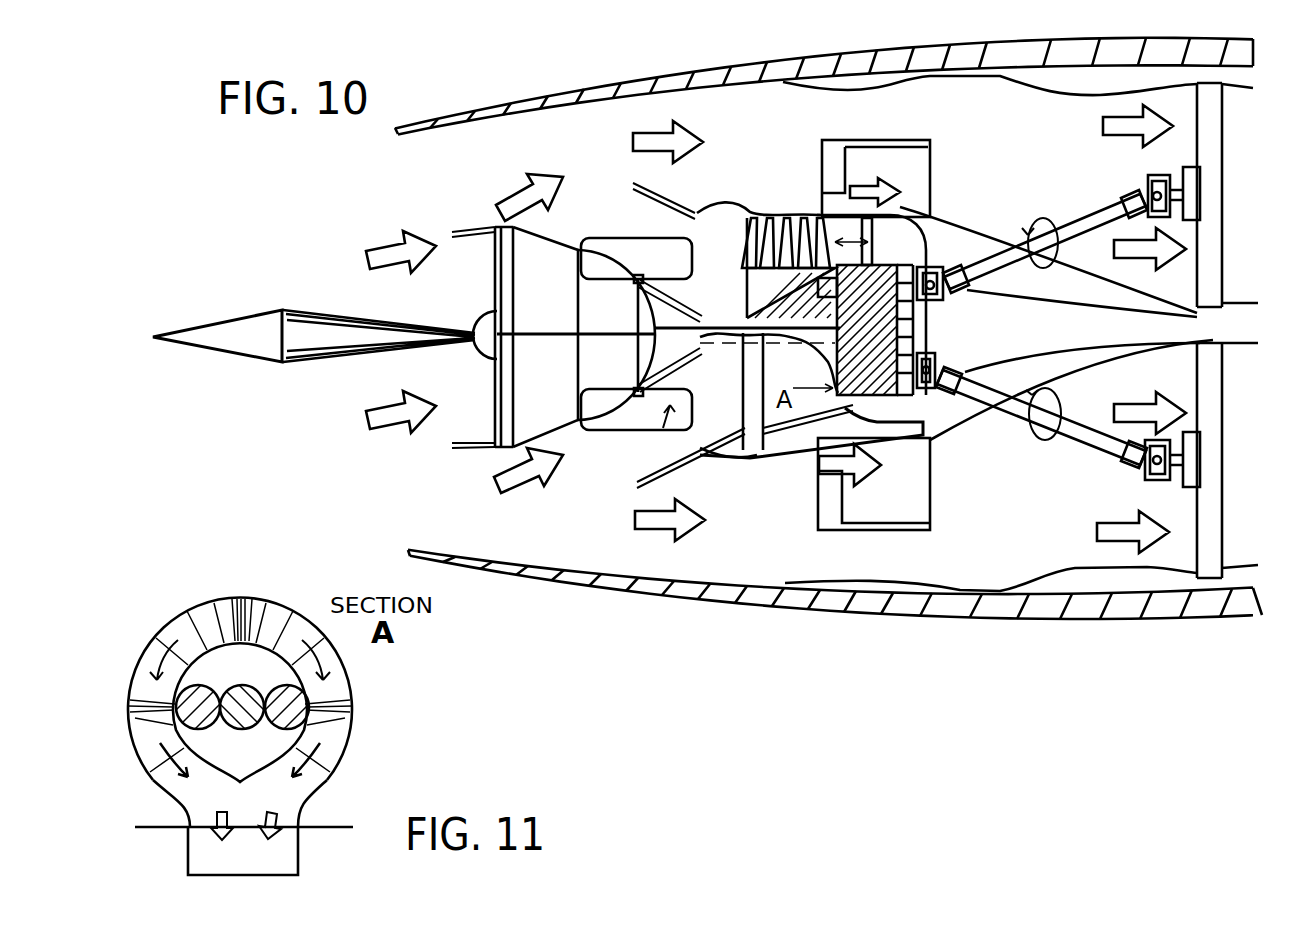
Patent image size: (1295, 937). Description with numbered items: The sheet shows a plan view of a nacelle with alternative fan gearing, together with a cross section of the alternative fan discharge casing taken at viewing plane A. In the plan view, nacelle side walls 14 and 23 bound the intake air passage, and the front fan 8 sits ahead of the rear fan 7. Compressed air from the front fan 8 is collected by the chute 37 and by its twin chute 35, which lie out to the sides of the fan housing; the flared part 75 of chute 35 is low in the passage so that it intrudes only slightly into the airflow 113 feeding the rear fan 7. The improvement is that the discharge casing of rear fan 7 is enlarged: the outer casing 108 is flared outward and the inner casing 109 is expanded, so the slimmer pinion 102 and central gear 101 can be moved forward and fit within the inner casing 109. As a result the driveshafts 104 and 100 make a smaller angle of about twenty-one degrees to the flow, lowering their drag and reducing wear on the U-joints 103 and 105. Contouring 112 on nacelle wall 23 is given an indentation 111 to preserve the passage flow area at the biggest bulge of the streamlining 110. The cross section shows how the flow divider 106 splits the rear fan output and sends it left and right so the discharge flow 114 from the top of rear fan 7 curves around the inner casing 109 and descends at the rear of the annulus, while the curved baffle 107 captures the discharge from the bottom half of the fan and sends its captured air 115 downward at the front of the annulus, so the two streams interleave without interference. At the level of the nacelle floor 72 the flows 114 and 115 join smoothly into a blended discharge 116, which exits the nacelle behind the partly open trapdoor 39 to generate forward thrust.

In FIG. 10, the nacelle side wall 14 is at (627, 80).
In FIG. 10, the nacelle side wall 23 is at (680, 590).
In FIG. 10, the front fan 8 is at (507, 390).
In FIG. 10, the chute 37 is at (614, 238).
In FIG. 10, the chute 35 is at (607, 430).
In FIG. 10, the flared part 75 is at (661, 430).
In FIG. 10, the airflow 113 is at (527, 480).
In FIG. 10, the rear fan 7 is at (747, 389).
In FIG. 10, the flow divider 106 is at (810, 343).
In FIG. 11, the flow divider 106 is at (258, 605).
In FIG. 10, the curved baffle 107 is at (840, 243).
In FIG. 11, the curved baffle 107 is at (347, 720).
In FIG. 10, the outer casing 108 is at (890, 217).
In FIG. 11, the outer casing 108 is at (178, 615).
In FIG. 10, the inner casing 109 is at (900, 233).
In FIG. 11, the inner casing 109 is at (198, 692).
In FIG. 10, the driveshaft 100 is at (1098, 220).
In FIG. 10, the central gear 101 is at (923, 325).
In FIG. 11, the central gear 101 is at (241, 727).
In FIG. 10, the U-joint 103 is at (932, 388).
In FIG. 10, the pinion 102 is at (867, 395).
In FIG. 11, the pinion 102 is at (287, 697).
In FIG. 10, the streamlining 110 is at (947, 430).
In FIG. 10, the driveshaft 104 is at (1080, 432).
In FIG. 10, the U-joint 105 is at (1153, 477).
In FIG. 10, the contouring 112 is at (863, 580).
In FIG. 10, the indentation 111 is at (964, 572).
In FIG. 11, the discharge flow 114 is at (333, 656).
In FIG. 11, the captured air 115 is at (333, 753).
In FIG. 11, the nacelle floor 72 is at (330, 823).
In FIG. 11, the trapdoor 39 is at (200, 857).
In FIG. 11, the blended discharge 116 is at (280, 833).